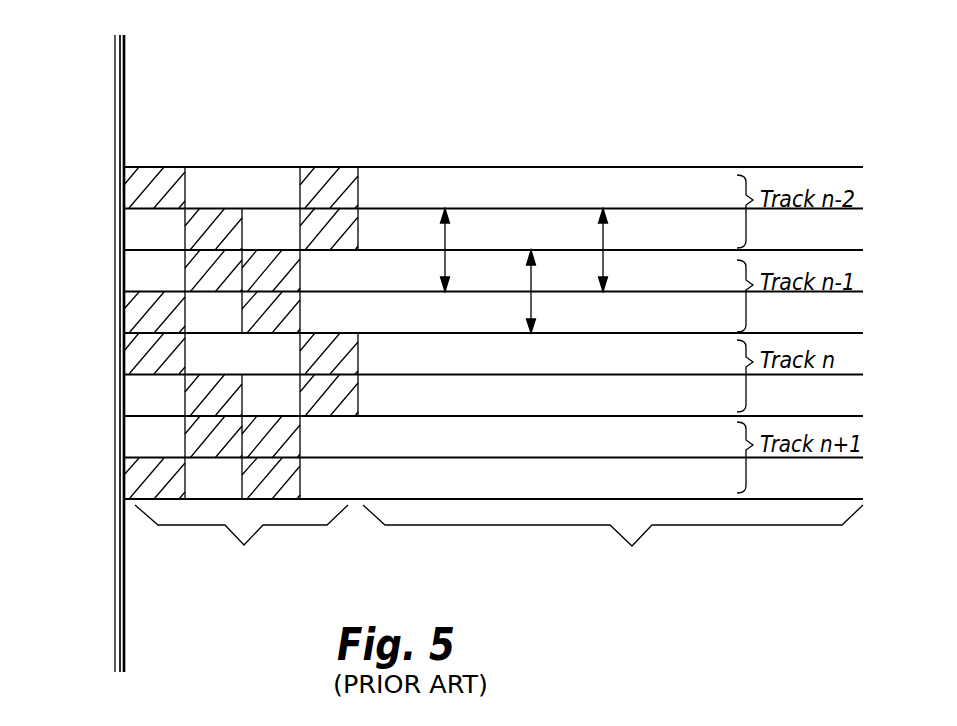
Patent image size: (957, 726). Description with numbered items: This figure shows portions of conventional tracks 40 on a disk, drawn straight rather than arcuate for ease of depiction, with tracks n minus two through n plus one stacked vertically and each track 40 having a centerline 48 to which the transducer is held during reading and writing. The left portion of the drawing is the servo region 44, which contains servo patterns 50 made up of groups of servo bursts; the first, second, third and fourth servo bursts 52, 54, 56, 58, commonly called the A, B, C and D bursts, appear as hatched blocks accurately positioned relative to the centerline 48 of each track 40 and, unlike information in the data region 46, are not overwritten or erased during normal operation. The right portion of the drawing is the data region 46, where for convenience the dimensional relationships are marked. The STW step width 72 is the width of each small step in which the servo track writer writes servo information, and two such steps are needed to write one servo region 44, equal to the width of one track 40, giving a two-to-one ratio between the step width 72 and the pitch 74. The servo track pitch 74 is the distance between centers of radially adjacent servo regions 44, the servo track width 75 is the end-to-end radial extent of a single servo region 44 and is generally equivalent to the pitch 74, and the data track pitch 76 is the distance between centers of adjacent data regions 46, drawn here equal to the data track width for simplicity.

The track 40 is at (872, 175).
The servo region 44 is at (241, 554).
The data region 46 is at (613, 540).
The track centerline 48 is at (124, 458).
The servo pattern 50 is at (357, 106).
The first servo burst 52 is at (154, 298).
The second servo burst 54 is at (213, 298).
The third servo burst 56 is at (271, 298).
The fourth servo burst 58 is at (329, 257).
The STW step width 72 is at (380, 173).
The servo track pitch 74 is at (468, 250).
The servo track width 75 is at (553, 291).
The data track pitch 76 is at (623, 250).